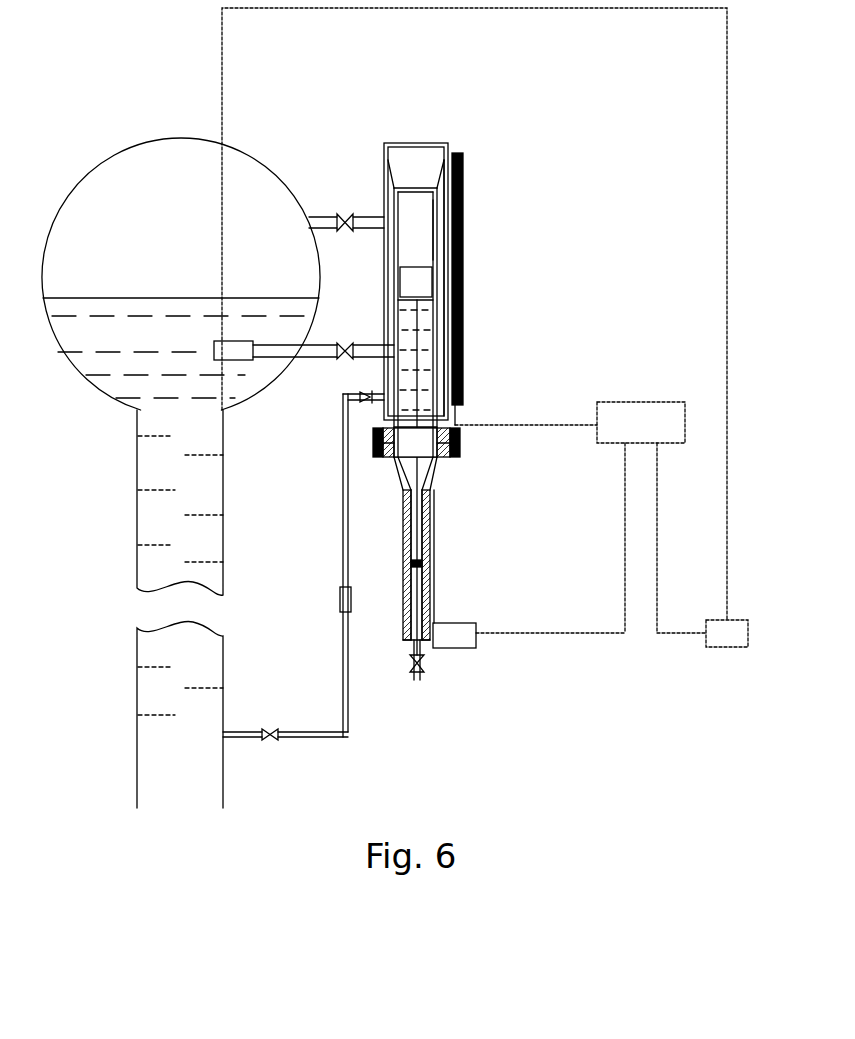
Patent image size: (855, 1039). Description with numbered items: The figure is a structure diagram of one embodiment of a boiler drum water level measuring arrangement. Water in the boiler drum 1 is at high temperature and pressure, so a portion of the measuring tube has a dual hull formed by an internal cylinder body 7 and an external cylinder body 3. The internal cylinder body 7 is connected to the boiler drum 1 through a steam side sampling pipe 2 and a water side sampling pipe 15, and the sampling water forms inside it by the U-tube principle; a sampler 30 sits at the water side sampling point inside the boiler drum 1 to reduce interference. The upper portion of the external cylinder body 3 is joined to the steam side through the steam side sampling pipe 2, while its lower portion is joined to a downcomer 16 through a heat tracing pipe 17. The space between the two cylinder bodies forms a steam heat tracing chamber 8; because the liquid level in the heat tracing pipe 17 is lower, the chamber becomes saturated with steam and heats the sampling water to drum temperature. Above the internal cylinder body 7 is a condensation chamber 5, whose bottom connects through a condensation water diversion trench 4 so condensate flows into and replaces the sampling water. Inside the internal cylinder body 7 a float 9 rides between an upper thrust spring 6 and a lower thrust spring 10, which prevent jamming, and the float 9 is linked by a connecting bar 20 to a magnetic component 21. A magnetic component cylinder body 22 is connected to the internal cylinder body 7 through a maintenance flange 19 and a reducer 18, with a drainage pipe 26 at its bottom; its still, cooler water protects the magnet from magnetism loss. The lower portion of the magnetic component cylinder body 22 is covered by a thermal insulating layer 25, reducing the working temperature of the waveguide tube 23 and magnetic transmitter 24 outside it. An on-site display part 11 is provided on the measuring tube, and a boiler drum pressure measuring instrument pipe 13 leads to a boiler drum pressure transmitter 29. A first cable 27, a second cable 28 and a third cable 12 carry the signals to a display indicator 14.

The boiler drum 1 is at (215, 138).
The steam side sampling pipe 2 is at (320, 218).
The external cylinder body 3 is at (395, 188).
The condensation water diversion trench 4 is at (386, 170).
The condensation chamber 5 is at (405, 158).
The upper thrust spring 6 is at (463, 155).
The internal cylinder body 7 is at (441, 200).
The steam heat tracing chamber 8 is at (434, 226).
The float 9 is at (427, 290).
The lower thrust spring 10 is at (458, 345).
The on-site display part 11 is at (410, 427).
The third cable 12 is at (540, 424).
The boiler drum pressure measuring instrument pipe 13 is at (727, 238).
The display indicator 14 is at (630, 402).
The water side sampling pipe 15 is at (303, 357).
The downcomer 16 is at (198, 546).
The heat tracing pipe 17 is at (253, 738).
The reducer 18 is at (405, 477).
The maintenance flange 19 is at (465, 438).
The connecting bar 20 is at (443, 523).
The magnetic component 21 is at (427, 560).
The magnetic component cylinder body 22 is at (432, 598).
The waveguide tube 23 is at (437, 618).
The magnetic transmitter 24 is at (457, 650).
The thermal insulating layer 25 is at (428, 641).
The drainage pipe 26 is at (413, 675).
The first cable 27 is at (573, 635).
The second cable 28 is at (667, 635).
The boiler drum pressure transmitter 29 is at (727, 647).
The sampler 30 is at (232, 360).